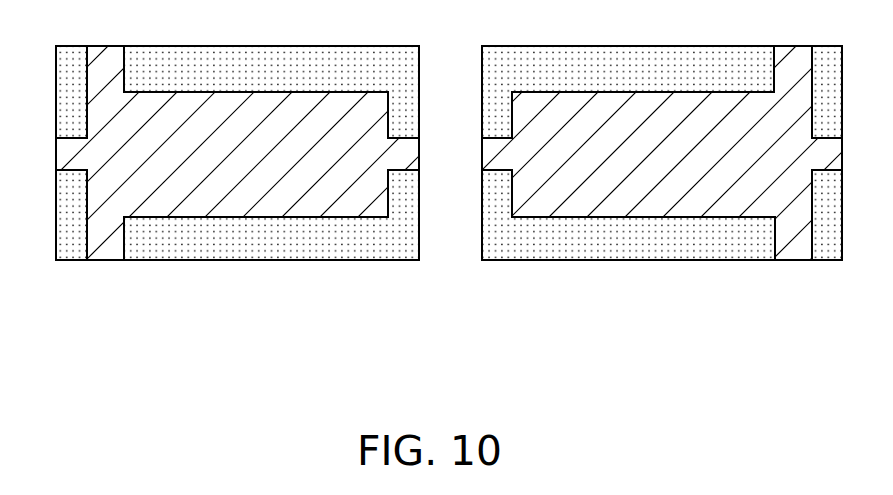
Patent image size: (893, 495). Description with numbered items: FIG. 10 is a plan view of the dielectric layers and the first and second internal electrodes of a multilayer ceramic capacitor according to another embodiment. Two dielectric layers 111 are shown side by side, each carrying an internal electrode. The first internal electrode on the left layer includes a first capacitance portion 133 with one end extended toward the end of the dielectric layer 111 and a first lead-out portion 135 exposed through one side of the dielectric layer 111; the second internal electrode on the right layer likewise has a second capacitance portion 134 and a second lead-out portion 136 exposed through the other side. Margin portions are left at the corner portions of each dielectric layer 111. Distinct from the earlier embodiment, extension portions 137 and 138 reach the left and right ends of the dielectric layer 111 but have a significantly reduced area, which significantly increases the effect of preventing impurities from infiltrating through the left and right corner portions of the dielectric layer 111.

The dielectric layer 111 is at (335, 245).
The first capacitance portion 133 is at (242, 170).
The second capacitance portion 134 is at (658, 170).
The first lead-out portion 135 is at (151, 244).
The second lead-out portion 136 is at (750, 245).
The extension portion 137 is at (77, 152).
The extension portion 138 is at (493, 152).